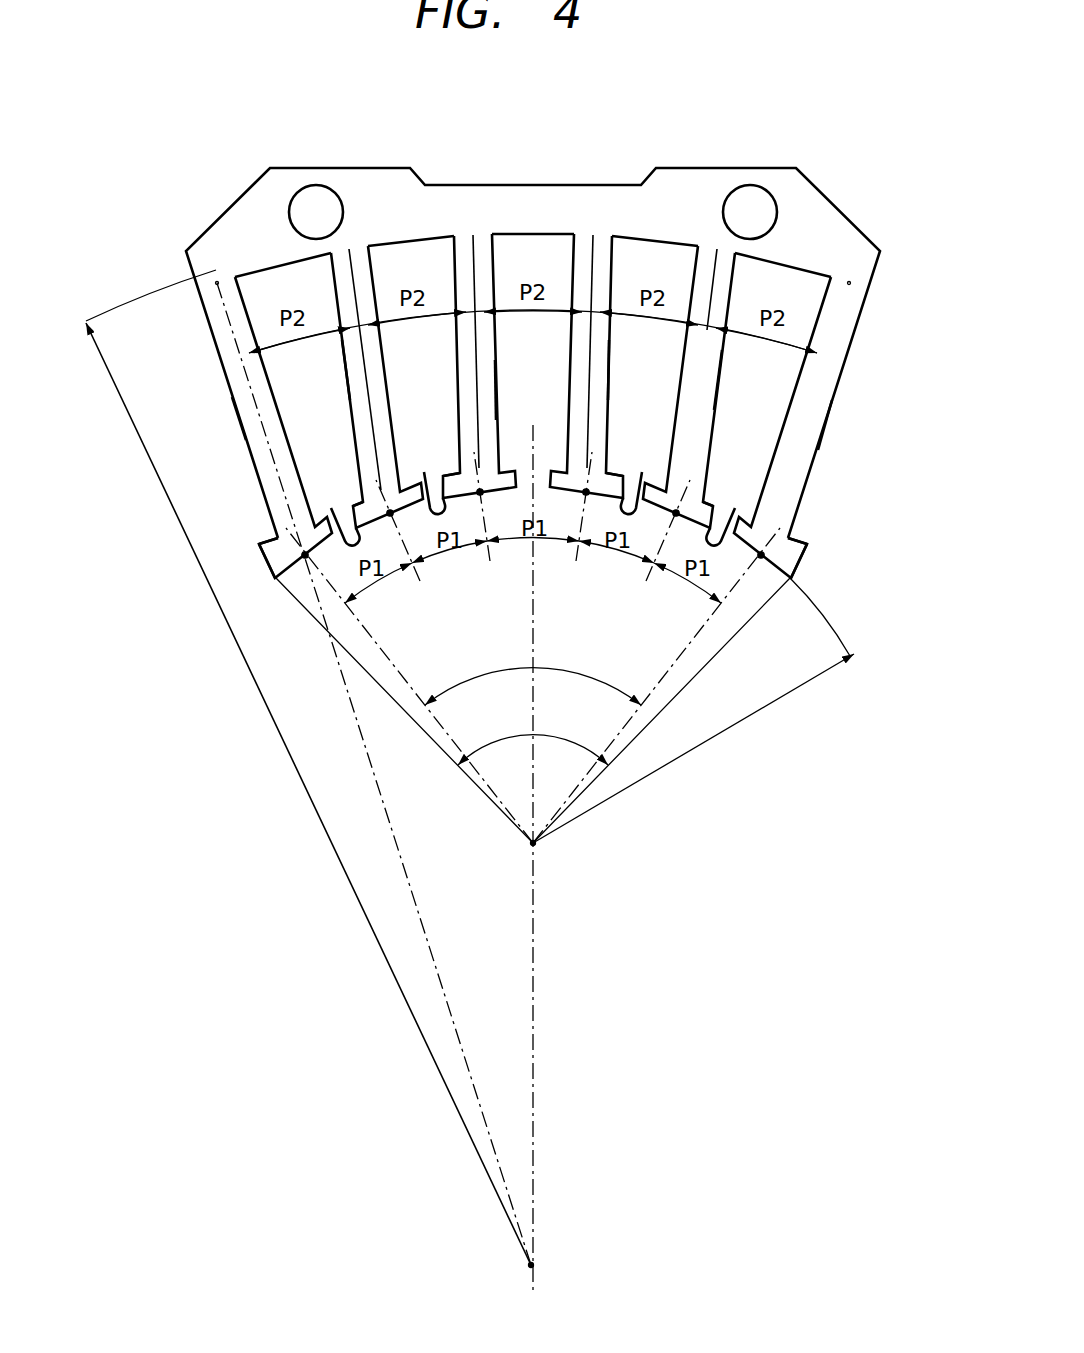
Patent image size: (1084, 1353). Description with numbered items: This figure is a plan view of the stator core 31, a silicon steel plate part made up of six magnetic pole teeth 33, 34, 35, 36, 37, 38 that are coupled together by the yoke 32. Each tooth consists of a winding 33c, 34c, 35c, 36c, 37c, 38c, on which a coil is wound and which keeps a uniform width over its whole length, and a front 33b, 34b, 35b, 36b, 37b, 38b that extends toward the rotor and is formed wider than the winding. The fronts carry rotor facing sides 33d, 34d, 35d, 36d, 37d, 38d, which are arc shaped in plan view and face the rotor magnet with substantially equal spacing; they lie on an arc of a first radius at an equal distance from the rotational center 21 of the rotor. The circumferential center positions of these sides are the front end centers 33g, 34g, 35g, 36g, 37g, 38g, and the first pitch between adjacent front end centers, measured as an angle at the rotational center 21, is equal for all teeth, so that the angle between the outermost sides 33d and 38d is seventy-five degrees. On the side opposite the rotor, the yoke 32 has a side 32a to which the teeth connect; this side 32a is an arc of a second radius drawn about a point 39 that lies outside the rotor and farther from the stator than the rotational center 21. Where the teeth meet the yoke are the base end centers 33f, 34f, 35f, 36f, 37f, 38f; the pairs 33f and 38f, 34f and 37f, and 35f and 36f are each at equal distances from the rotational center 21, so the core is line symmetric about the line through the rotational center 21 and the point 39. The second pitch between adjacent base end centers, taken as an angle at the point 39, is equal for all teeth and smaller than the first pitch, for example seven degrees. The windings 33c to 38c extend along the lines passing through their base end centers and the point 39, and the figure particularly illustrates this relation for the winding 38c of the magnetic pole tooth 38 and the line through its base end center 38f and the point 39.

The rotational center 21 is at (540, 846).
The stator core 31 is at (283, 165).
The yoke 32 is at (541, 185).
The side 32a is at (426, 238).
The magnetic pole tooth 33 is at (838, 384).
The front 33b is at (809, 547).
The winding 33c is at (815, 455).
The rotor facing side 33d is at (792, 582).
The base end center 33f is at (850, 281).
The front end center 33g is at (760, 560).
The magnetic pole tooth 34 is at (722, 350).
The front 34b is at (708, 456).
The winding 34c is at (716, 390).
The rotor facing side 34d is at (717, 520).
The base end center 34f is at (717, 247).
The front end center 34g is at (677, 517).
The magnetic pole tooth 35 is at (608, 344).
The front 35b is at (607, 440).
The winding 35c is at (600, 374).
The rotor facing side 35d is at (623, 478).
The base end center 35f is at (593, 233).
The front end center 35g is at (588, 495).
The magnetic pole tooth 36 is at (495, 345).
The front 36b is at (458, 452).
The winding 36c is at (496, 395).
The rotor facing side 36d is at (447, 466).
The base end center 36f is at (474, 233).
The front end center 36g is at (483, 494).
The magnetic pole tooth 37 is at (383, 352).
The front 37b is at (360, 488).
The winding 37c is at (345, 382).
The rotor facing side 37d is at (342, 505).
The base end center 37f is at (349, 247).
The front end center 37g is at (394, 512).
The magnetic pole tooth 38 is at (263, 391).
The front 38b is at (261, 547).
The winding 38c is at (250, 441).
The rotor facing side 38d is at (288, 583).
The base end center 38f is at (215, 282).
The front end center 38g is at (311, 556).
The point 39 is at (538, 1265).